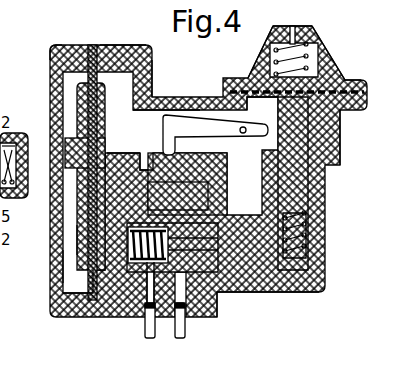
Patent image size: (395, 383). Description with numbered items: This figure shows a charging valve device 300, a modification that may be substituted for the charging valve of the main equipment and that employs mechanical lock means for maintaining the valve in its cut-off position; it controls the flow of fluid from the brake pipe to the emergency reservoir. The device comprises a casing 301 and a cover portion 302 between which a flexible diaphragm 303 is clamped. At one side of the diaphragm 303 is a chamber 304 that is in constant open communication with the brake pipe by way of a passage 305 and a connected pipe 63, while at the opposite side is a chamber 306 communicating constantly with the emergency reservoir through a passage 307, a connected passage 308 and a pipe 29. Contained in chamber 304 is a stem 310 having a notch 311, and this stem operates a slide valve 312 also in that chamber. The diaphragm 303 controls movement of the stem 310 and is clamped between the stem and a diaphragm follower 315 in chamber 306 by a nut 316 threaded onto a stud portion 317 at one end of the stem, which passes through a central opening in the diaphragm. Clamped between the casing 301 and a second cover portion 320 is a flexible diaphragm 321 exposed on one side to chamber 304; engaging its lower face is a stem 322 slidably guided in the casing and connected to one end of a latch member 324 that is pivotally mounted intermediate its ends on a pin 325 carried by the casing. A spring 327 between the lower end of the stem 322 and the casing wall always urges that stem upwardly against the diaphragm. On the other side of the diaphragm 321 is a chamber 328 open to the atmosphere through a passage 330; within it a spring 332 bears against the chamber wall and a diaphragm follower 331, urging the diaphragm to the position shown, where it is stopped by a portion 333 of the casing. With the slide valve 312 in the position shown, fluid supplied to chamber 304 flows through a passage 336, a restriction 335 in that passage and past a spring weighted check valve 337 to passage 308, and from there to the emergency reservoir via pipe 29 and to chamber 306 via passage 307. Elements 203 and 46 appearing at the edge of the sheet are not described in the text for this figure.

The charging valve device 300 is at (80, 33).
The casing 301 is at (126, 45).
The cover portion 302 is at (54, 46).
The flexible diaphragm 303 is at (101, 85).
The chamber 304 is at (157, 92).
The passage 305 is at (216, 293).
The chamber 306 is at (66, 271).
The passage 307 is at (106, 300).
The passage 308 is at (152, 308).
The stem 310 is at (118, 151).
The notch 311 is at (146, 163).
The slide valve 312 is at (215, 135).
The diaphragm follower 315 is at (73, 255).
The nut 316 is at (77, 237).
The stud portion 317 is at (70, 176).
The cover portion 320 is at (321, 43).
The flexible diaphragm 321 is at (327, 56).
The stem 322 is at (296, 190).
The latch member 324 is at (179, 124).
The pin 325 is at (243, 133).
The spring 327 is at (304, 232).
The chamber 328 is at (262, 80).
The passage 330 is at (292, 27).
The diaphragm follower 331 is at (262, 109).
The spring 332 is at (313, 28).
The portion of the casing 333 is at (340, 132).
The restriction 335 is at (216, 227).
The passage 336 is at (223, 290).
The spring weighted check valve 337 is at (128, 255).
The pipe 29 is at (150, 340).
The pipe 63 is at (179, 340).
The adjacent housing 203 is at (19, 156).
The spring 46 is at (9, 138).